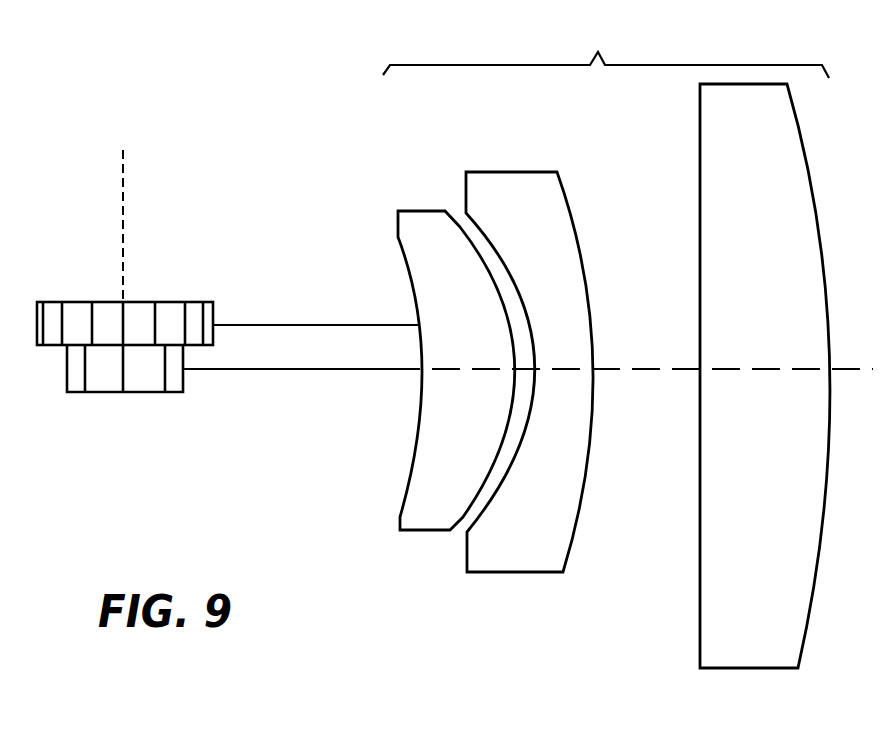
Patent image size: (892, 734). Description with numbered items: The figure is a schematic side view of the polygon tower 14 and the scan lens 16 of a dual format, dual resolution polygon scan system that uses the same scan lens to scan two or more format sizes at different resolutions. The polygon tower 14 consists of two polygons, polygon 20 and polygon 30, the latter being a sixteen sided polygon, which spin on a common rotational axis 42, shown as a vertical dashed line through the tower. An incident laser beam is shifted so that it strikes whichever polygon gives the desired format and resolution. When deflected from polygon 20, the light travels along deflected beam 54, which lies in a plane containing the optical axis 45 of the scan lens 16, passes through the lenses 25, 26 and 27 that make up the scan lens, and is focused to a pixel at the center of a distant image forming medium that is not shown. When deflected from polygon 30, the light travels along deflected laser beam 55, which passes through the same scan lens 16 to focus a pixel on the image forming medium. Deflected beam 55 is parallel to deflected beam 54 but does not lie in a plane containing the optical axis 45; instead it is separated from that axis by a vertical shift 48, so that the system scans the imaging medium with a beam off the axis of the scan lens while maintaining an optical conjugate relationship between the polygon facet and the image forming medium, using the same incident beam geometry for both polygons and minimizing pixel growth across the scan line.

The polygon tower 14 is at (115, 367).
The scan lens 16 is at (604, 58).
The polygon 20 is at (66, 380).
The lens 25 is at (425, 191).
The lens 26 is at (502, 172).
The lens 27 is at (700, 124).
The polygon 30 is at (37, 303).
The common rotational axis 42 is at (123, 176).
The optical axis 45 is at (658, 371).
The vertical shift 48 is at (357, 393).
The deflected beam 54 is at (307, 370).
The deflected laser beam 55 is at (298, 300).